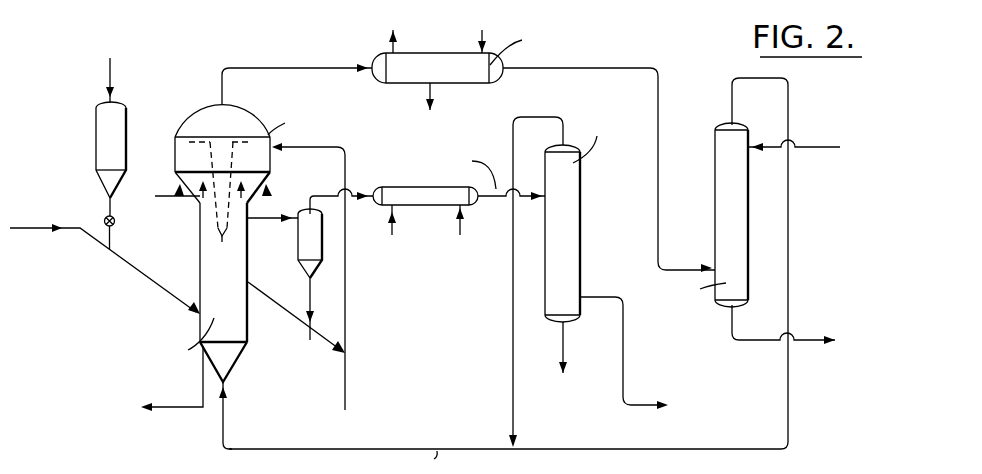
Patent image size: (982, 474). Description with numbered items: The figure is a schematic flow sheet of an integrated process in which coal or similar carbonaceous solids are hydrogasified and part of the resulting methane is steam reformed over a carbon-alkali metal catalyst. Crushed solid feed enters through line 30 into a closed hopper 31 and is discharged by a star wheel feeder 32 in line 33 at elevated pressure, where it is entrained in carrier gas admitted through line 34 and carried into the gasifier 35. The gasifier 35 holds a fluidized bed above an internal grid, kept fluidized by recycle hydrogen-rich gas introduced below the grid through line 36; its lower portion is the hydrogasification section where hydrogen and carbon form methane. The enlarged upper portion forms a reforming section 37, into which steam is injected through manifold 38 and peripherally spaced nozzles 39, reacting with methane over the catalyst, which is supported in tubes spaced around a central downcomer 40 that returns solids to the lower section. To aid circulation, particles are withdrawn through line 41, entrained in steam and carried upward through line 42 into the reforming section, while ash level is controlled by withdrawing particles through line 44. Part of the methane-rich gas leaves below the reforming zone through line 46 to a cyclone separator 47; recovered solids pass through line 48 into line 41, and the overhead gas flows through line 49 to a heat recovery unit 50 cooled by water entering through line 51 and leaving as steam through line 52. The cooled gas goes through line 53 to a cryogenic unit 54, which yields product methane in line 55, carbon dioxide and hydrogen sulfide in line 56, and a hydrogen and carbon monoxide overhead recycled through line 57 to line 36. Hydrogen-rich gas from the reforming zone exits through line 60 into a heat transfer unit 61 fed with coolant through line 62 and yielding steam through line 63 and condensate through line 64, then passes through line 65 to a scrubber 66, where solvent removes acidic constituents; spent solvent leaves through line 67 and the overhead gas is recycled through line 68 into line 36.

The feed line 30 is at (107, 73).
The closed hopper 31 is at (100, 142).
The star wheel feeder 32 is at (113, 217).
The feed discharge line 33 is at (114, 242).
The carrier gas line 34 is at (45, 230).
The gasifier 35 is at (204, 298).
The recycle hydrogen-rich gas line 36 is at (226, 413).
The reforming section 37 is at (181, 152).
The steam manifold 38 is at (181, 198).
The peripherally spaced nozzles 39 is at (174, 192).
The downcomer 40 is at (220, 203).
The solids withdrawal line 41 is at (289, 310).
The steam entrainment line 42 is at (347, 328).
The ash withdrawal line 44 is at (202, 386).
The methane-rich gas line 46 is at (268, 218).
The cyclone separator 47 is at (306, 246).
The separator solids discharge line 48 is at (311, 296).
The separator overhead gas line 49 is at (322, 194).
The heat recovery unit 50 is at (393, 191).
The coolant inlet line 51 is at (457, 226).
The steam withdrawal line 52 is at (392, 226).
The cooled gas line 53 is at (499, 200).
The cryogenic unit 54 is at (574, 211).
The product methane line 55 is at (623, 355).
The contaminant recovery line 56 is at (566, 342).
The cryogenic overhead recycle line 57 is at (512, 329).
The reforming zone gas outlet line 60 is at (245, 70).
The heat transfer unit 61 is at (442, 77).
The coolant inlet line 62 is at (476, 45).
The steam outlet line 63 is at (391, 50).
The condensate line 64 is at (434, 93).
The cooled gas line to scrubber 65 is at (559, 68).
The scrubber 66 is at (722, 188).
The spent solvent line 67 is at (730, 329).
The scrubber overhead recycle line 68 is at (731, 85).